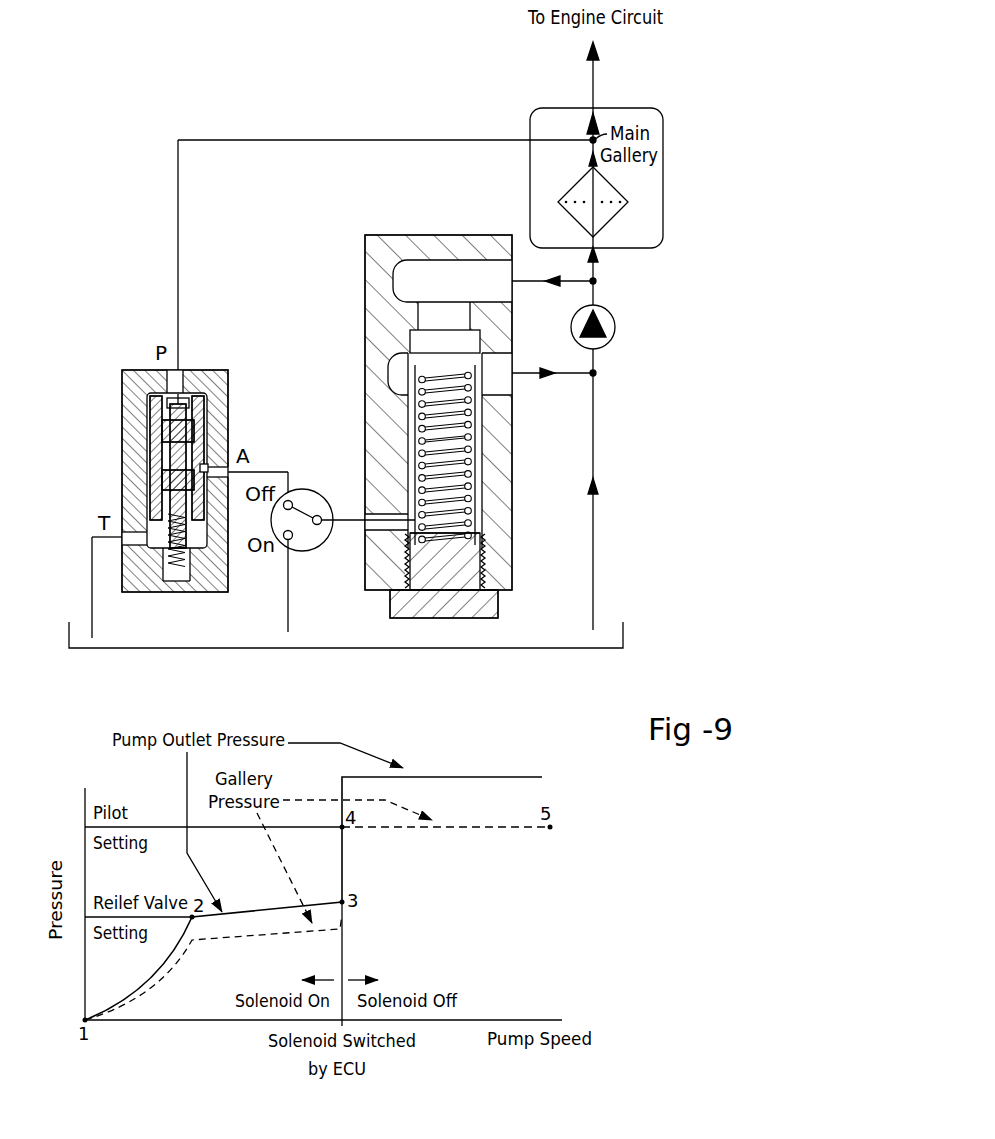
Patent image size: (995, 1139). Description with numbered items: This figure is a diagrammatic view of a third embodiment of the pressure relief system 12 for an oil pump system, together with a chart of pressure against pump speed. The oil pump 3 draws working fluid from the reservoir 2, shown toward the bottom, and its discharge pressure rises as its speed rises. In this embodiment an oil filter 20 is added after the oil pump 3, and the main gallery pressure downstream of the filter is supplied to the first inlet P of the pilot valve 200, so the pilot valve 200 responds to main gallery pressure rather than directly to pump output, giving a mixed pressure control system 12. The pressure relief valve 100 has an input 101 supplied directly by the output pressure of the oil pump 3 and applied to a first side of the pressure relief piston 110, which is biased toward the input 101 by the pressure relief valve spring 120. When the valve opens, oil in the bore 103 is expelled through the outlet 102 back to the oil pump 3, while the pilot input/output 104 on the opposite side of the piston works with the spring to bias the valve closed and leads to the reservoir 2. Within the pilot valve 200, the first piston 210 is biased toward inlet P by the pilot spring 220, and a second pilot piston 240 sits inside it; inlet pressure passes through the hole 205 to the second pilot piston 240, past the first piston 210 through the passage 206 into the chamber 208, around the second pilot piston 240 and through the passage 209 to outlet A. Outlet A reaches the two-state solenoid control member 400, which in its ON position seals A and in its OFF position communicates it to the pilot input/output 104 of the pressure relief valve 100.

The reservoir 2 is at (510, 650).
The oil pump 3 is at (614, 318).
The pressure relief system 12 is at (296, 260).
The oil filter 20 is at (568, 192).
The pressure relief valve 100 is at (424, 236).
The input 101 is at (523, 282).
The outlet 102 is at (525, 375).
The bore 103 is at (456, 330).
The pilot input/output 104 is at (358, 500).
The pressure relief piston 110 is at (482, 433).
The pressure relief valve spring 120 is at (470, 520).
The pilot valve 200 is at (138, 370).
The hole 205 is at (177, 408).
The passage 206 is at (153, 448).
The chamber 208 is at (152, 473).
The passage 209 is at (203, 467).
The first piston 210 is at (210, 398).
The pilot spring 220 is at (186, 553).
The second pilot piston 240 is at (172, 430).
The control member 400 is at (320, 548).